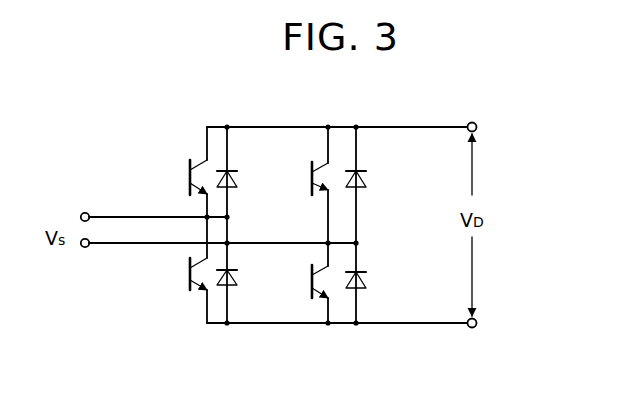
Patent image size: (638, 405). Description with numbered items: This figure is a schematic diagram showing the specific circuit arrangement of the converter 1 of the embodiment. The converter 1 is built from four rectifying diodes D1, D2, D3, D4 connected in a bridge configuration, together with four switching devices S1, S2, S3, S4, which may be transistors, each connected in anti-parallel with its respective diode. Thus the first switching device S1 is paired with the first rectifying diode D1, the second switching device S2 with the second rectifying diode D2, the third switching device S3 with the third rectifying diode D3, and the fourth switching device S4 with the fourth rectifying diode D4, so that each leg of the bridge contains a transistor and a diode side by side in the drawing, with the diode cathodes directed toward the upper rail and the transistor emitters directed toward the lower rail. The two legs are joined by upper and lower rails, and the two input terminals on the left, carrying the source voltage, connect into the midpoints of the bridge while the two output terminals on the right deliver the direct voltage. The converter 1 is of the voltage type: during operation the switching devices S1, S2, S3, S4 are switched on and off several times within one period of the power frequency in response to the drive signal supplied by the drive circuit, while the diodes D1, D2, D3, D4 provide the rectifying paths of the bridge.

The converter 1 is at (400, 122).
The switching device S1 is at (190, 178).
The switching device S2 is at (190, 278).
The switching device S3 is at (312, 189).
The switching device S4 is at (312, 288).
The rectifying diode D1 is at (237, 172).
The rectifying diode D2 is at (237, 273).
The rectifying diode D3 is at (366, 173).
The rectifying diode D4 is at (366, 280).